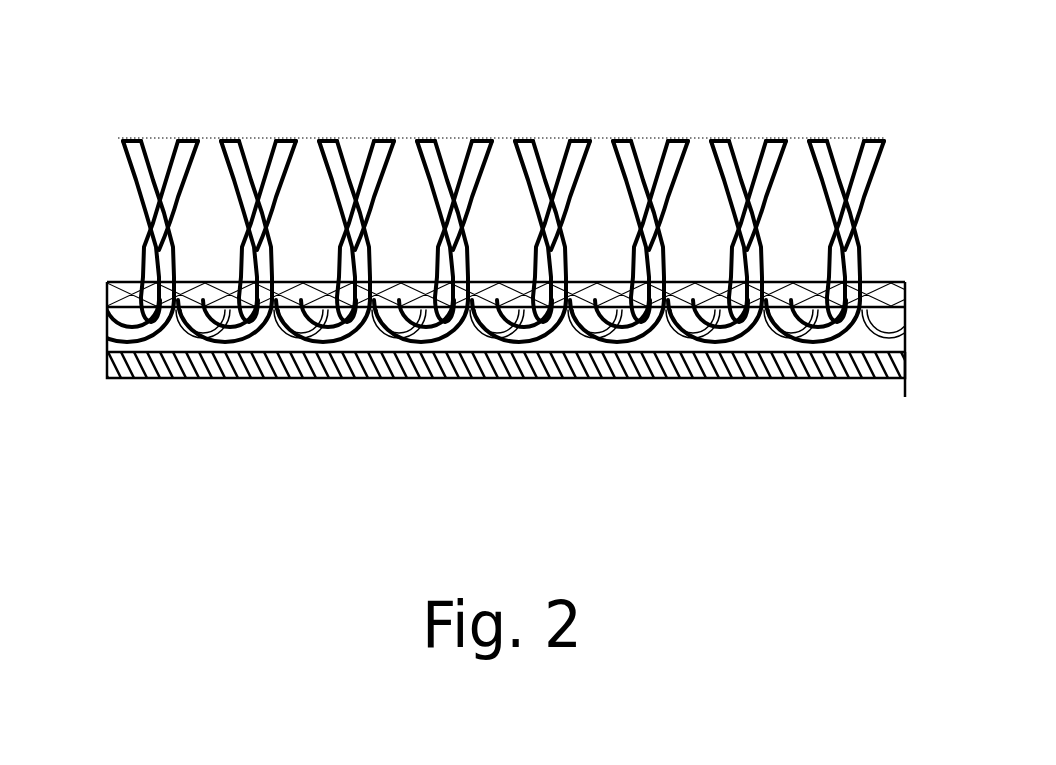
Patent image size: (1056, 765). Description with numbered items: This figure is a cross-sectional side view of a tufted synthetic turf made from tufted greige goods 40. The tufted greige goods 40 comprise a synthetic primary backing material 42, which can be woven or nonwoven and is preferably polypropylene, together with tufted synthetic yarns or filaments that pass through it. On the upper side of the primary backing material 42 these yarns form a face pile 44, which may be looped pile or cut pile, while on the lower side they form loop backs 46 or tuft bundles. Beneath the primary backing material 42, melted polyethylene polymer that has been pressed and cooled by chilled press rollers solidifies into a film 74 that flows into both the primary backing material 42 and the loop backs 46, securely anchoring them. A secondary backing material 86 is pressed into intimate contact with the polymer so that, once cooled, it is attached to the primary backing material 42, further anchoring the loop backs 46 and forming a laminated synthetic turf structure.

The tufted greige goods 40 is at (561, 264).
The primary backing material 42 is at (120, 290).
The face pile 44 is at (343, 153).
The loop backs 46 is at (305, 333).
The film 74 is at (158, 342).
The secondary backing material 86 is at (778, 373).